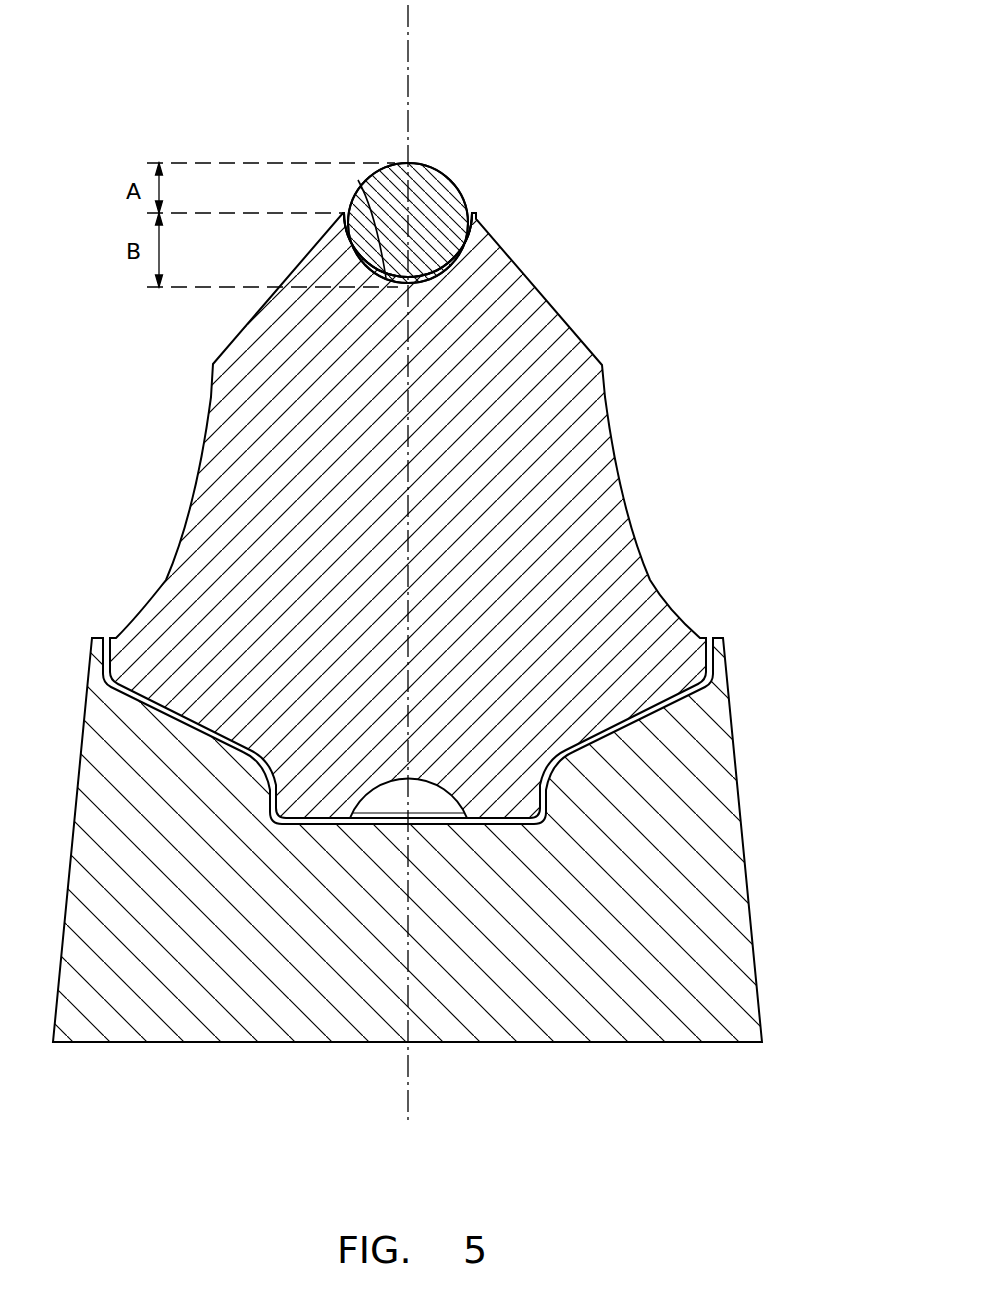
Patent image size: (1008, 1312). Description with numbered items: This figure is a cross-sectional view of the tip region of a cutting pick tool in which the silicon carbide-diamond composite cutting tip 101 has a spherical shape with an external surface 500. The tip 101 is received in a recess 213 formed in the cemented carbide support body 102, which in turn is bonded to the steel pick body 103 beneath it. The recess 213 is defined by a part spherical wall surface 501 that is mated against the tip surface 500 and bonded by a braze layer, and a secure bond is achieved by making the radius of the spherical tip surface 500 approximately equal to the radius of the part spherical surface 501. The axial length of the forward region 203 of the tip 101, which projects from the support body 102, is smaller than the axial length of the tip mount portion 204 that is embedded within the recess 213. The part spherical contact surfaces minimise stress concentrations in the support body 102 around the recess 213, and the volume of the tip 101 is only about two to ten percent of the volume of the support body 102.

The cutting tip 101 is at (521, 158).
The support body 102 is at (627, 397).
The pick body 103 is at (741, 802).
The forward region 203 is at (423, 183).
The tip mount portion 204 is at (459, 238).
The recess 213 is at (463, 278).
The external surface 500 is at (464, 196).
The part spherical wall surface 501 is at (358, 197).